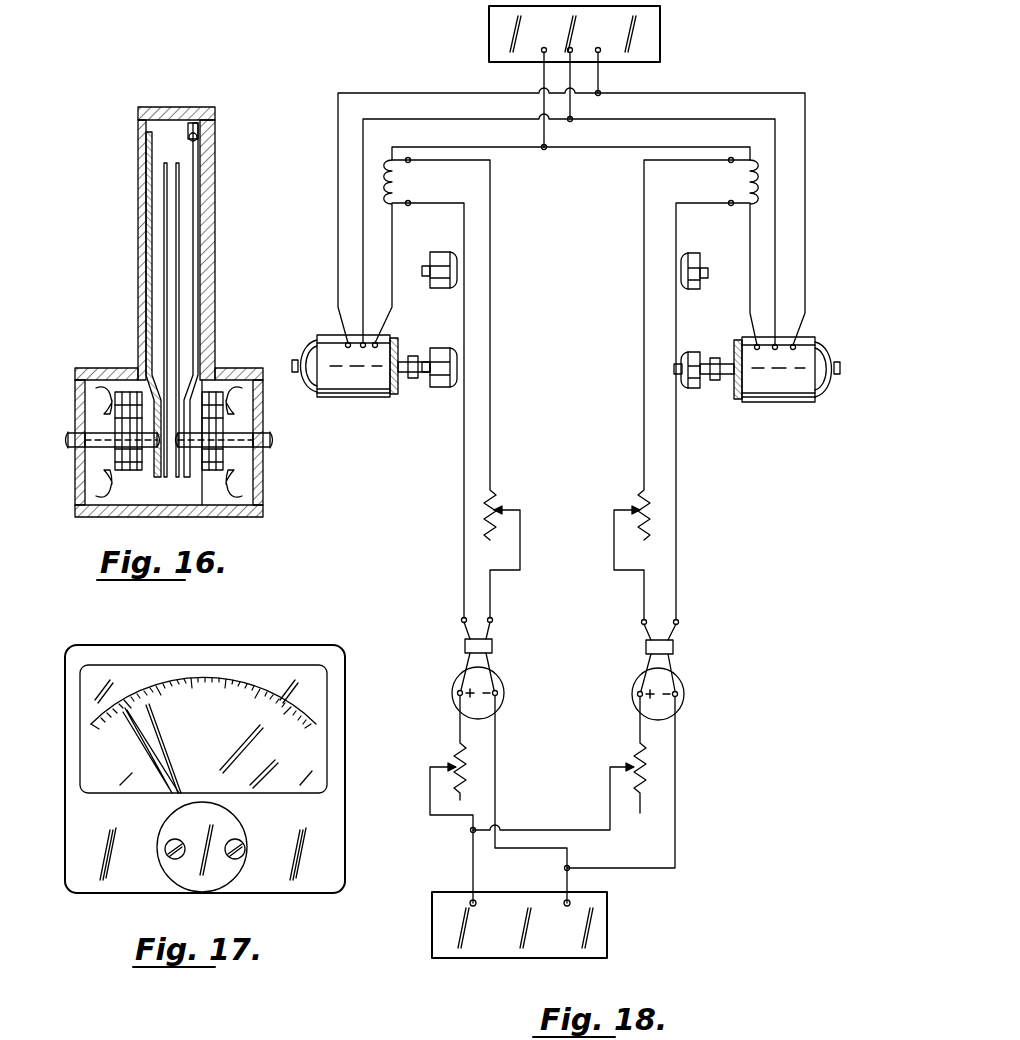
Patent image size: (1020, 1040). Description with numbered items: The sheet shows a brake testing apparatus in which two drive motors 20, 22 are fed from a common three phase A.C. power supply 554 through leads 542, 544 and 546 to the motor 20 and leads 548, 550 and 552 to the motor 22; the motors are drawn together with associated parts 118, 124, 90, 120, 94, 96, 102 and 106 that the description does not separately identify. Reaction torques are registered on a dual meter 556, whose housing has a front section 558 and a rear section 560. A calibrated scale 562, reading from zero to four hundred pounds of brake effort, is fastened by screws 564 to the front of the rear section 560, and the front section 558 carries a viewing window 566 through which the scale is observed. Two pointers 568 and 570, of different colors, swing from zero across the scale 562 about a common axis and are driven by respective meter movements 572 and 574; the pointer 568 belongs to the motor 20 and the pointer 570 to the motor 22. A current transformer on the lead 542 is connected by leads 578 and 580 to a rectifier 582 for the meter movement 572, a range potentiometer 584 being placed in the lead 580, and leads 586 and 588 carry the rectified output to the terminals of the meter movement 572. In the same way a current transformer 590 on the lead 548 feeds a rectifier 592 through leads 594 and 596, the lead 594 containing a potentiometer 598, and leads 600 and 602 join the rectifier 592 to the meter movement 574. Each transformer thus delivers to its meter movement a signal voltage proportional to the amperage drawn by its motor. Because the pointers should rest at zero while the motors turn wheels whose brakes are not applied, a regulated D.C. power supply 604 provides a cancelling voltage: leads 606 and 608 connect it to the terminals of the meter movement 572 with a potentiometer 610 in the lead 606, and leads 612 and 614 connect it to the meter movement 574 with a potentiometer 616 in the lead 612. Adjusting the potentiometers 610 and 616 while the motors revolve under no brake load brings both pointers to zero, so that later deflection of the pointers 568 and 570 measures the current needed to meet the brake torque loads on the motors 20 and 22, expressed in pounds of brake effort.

In FIG. 16, the dual meter 556 is at (230, 138).
In FIG. 17, the dual meter 556 is at (292, 640).
In FIG. 16, the screws 564 is at (191, 108).
In FIG. 16, the viewing window 566 is at (148, 242).
In FIG. 17, the viewing window 566 is at (110, 678).
In FIG. 16, the scale 562 is at (198, 228).
In FIG. 17, the scale 562 is at (320, 684).
In FIG. 16, the pointer 568 is at (163, 180).
In FIG. 17, the pointer 568 is at (140, 740).
In FIG. 16, the pointer 570 is at (180, 174).
In FIG. 17, the pointer 570 is at (162, 738).
In FIG. 16, the front section 558 is at (108, 368).
In FIG. 17, the front section 558 is at (330, 832).
In FIG. 16, the rear section 560 is at (236, 368).
In FIG. 16, the meter movement 572 is at (120, 477).
In FIG. 18, the meter movement 572 is at (504, 694).
In FIG. 16, the meter movement 574 is at (208, 478).
In FIG. 18, the meter movement 574 is at (684, 700).
In FIG. 16, the lead 586 is at (100, 412).
In FIG. 18, the lead 586 is at (462, 680).
In FIG. 16, the lead 588 is at (104, 484).
In FIG. 18, the lead 588 is at (497, 681).
In FIG. 16, the lead 600 is at (238, 398).
In FIG. 18, the lead 600 is at (643, 681).
In FIG. 16, the lead 602 is at (238, 482).
In FIG. 18, the lead 602 is at (677, 681).
In FIG. 18, the three phase A.C. power supply 554 is at (661, 22).
In FIG. 18, the lead 546 is at (440, 92).
In FIG. 18, the lead 552 is at (694, 92).
In FIG. 18, the lead 544 is at (503, 118).
In FIG. 18, the lead 550 is at (670, 118).
In FIG. 18, the lead 542 is at (418, 146).
In FIG. 18, the lead 548 is at (646, 146).
In FIG. 18, the lead 580 is at (483, 163).
In FIG. 18, the lead 578 is at (440, 203).
In FIG. 18, the lead 594 is at (648, 153).
In FIG. 18, the lead 596 is at (680, 410).
In FIG. 18, the current transformer 590 is at (742, 186).
In FIG. 18, the range potentiometer 584 is at (492, 494).
In FIG. 18, the potentiometer 598 is at (644, 500).
In FIG. 18, the motor 20 is at (352, 392).
In FIG. 18, the motor 22 is at (797, 397).
In FIG. 18, the motor end cap 118 is at (298, 358).
In FIG. 18, the motor end cap 124 is at (828, 374).
In FIG. 18, the shaft coupling 90 is at (426, 360).
In FIG. 18, the shaft 120 is at (416, 378).
In FIG. 18, the gear 94 is at (448, 350).
In FIG. 18, the gear 96 is at (440, 254).
In FIG. 18, the gear 102 is at (692, 352).
In FIG. 18, the gear 106 is at (694, 256).
In FIG. 18, the rectifier 582 is at (492, 645).
In FIG. 18, the rectifier 592 is at (675, 646).
In FIG. 18, the lead 606 is at (456, 736).
In FIG. 18, the potentiometer 616 is at (634, 750).
In FIG. 18, the lead 608 is at (500, 734).
In FIG. 18, the potentiometer 610 is at (456, 776).
In FIG. 18, the lead 612 is at (570, 830).
In FIG. 18, the lead 614 is at (677, 790).
In FIG. 18, the regulated D.C. power supply 604 is at (452, 948).